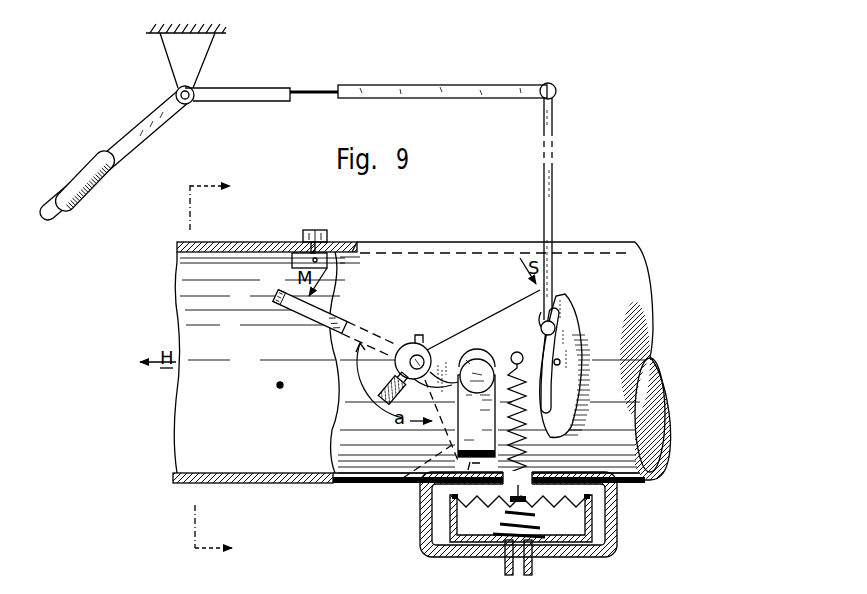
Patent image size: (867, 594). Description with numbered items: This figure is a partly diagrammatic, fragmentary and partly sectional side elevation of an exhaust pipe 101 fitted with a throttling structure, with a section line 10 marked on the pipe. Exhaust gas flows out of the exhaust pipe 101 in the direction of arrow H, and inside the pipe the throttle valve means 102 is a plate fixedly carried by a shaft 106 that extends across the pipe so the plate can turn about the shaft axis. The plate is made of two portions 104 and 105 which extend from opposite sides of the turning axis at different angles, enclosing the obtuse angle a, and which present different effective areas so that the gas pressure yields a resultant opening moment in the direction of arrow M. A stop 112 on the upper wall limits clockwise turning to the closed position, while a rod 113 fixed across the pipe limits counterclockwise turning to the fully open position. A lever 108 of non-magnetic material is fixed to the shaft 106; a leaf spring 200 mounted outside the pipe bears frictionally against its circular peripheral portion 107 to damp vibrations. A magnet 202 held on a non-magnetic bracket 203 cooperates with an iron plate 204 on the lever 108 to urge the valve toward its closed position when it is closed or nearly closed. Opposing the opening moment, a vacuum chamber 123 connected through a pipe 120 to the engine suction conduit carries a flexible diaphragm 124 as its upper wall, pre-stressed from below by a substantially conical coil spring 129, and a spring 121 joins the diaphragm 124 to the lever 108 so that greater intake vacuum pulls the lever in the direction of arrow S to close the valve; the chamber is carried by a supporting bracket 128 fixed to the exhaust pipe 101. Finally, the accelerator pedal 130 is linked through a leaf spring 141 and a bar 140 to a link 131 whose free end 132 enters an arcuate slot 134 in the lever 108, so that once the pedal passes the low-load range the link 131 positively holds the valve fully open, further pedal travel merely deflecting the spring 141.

The section line 10 is at (198, 370).
The exhaust pipe 101 is at (240, 243).
The throttle valve means 102 is at (323, 327).
The throttle valve plate portion 104 is at (281, 300).
The throttle valve plate portion 105 is at (403, 478).
The shaft 106 is at (445, 352).
The circular peripheral portion 107 is at (418, 343).
The lever 108 is at (568, 350).
The stop 112 is at (284, 243).
The rod 113 is at (280, 386).
The pipe 120 is at (527, 567).
The spring 121 is at (528, 380).
The vacuum chamber 123 is at (445, 523).
The flexible diaphragm 124 is at (472, 545).
The supporting bracket 128 is at (614, 529).
The conical coil spring 129 is at (484, 536).
The accelerator pedal 130 is at (152, 107).
The link 131 is at (556, 192).
The free end 132 is at (560, 305).
The arcuate slot 134 is at (557, 370).
The bar 140 is at (461, 86).
The leaf spring 141 is at (318, 88).
The spring 200 is at (397, 348).
The magnet 202 is at (478, 350).
The non-magnetic bracket 203 is at (466, 426).
The iron plate 204 is at (488, 348).